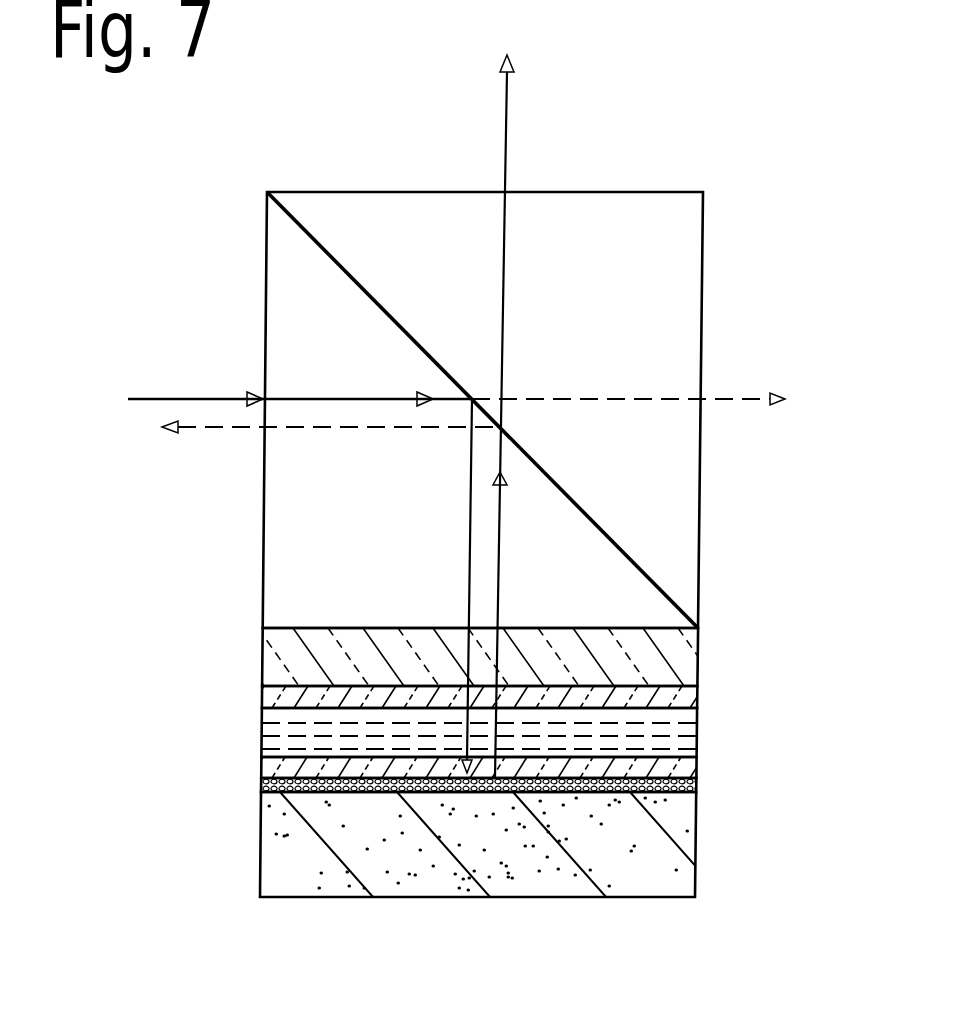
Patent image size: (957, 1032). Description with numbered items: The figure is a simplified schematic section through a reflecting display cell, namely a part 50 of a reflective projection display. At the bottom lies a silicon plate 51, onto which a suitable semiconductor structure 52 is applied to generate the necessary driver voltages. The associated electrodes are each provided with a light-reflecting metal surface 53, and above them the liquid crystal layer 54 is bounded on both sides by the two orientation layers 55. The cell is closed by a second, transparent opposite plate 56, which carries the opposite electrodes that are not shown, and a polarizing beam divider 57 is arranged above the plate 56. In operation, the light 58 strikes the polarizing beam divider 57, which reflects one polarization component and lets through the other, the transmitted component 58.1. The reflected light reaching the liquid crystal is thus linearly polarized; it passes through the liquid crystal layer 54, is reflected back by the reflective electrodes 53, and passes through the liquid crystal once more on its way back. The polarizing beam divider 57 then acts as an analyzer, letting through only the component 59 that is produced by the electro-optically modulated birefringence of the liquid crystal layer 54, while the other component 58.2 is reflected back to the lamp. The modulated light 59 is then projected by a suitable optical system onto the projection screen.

The part of reflective projection display 50 is at (569, 920).
The silicon plate 51 is at (693, 873).
The semiconductor structure 52 is at (712, 800).
The light-reflecting metal surface 53 is at (698, 766).
The liquid crystal layer 54 is at (698, 728).
The orientation layers 55 is at (258, 697).
The transparent opposite plate 56 is at (260, 650).
The polarizing beam divider 57 is at (718, 503).
The light 58 is at (208, 398).
The transmitted polarization component 58.1 is at (627, 402).
The reflected-back light component 58.2 is at (308, 427).
The modulated light component 59 is at (506, 138).